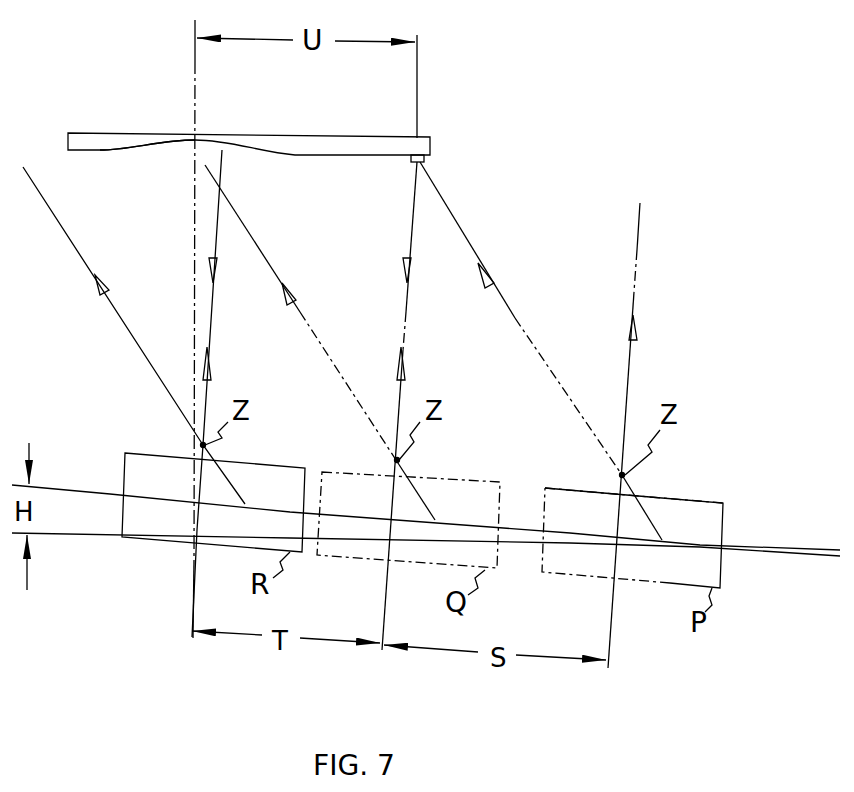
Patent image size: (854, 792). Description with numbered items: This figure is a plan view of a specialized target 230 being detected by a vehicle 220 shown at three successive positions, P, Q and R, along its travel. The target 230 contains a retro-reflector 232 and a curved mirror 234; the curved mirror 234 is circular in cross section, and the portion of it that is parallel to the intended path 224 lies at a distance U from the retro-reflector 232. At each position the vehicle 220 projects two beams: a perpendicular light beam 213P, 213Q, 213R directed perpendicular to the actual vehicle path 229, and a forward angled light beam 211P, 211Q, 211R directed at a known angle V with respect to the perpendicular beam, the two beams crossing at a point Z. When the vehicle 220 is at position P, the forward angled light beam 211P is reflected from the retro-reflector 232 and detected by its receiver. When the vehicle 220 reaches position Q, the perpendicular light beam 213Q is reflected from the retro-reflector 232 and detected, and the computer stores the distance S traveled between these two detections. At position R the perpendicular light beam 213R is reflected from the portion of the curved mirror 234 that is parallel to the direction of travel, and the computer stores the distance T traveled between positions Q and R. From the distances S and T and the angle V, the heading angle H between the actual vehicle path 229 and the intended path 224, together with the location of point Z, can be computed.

The specialized target 230 is at (432, 147).
The retro-reflector 232 is at (426, 160).
The curved mirror 234 is at (155, 143).
The forward angled light beam 211R is at (83, 260).
The forward angled light beam 211Q is at (270, 265).
The forward angled light beam 211P is at (482, 262).
The perpendicular light beam 213R is at (205, 402).
The perpendicular light beam 213Q is at (400, 400).
The perpendicular light beam 213P is at (630, 390).
The vehicle 220 is at (277, 463).
The actual vehicle path 229 is at (87, 491).
The intended path 224 is at (92, 539).